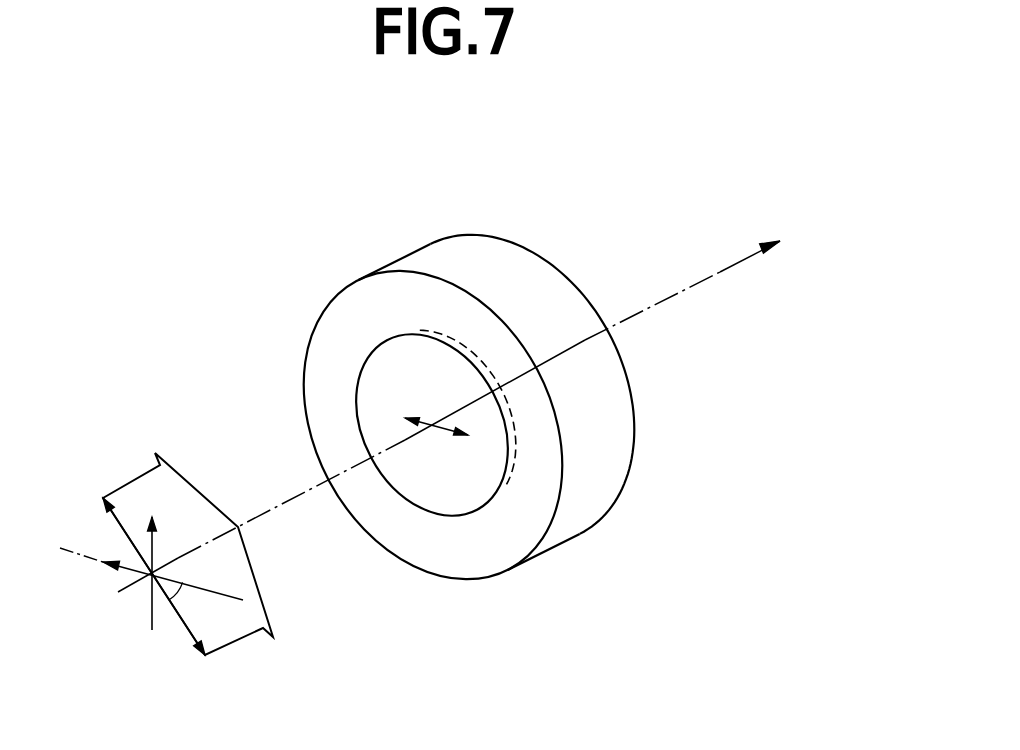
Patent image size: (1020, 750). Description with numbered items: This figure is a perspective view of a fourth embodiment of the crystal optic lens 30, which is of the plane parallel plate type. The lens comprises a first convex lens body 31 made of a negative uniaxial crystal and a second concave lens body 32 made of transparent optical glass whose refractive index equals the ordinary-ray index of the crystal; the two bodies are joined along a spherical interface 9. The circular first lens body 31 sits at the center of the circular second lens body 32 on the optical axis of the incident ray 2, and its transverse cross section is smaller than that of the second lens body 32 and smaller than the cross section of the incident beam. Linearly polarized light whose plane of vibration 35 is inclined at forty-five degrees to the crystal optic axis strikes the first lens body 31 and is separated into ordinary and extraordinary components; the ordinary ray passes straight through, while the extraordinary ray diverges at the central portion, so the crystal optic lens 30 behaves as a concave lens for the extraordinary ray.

The incident ray 2 is at (132, 588).
The spherical interface 9 is at (507, 408).
The crystal optic lens 30 is at (582, 187).
The first convex lens body 31 is at (445, 480).
The second concave lens body 32 is at (437, 245).
The plane of vibration 35 is at (147, 475).